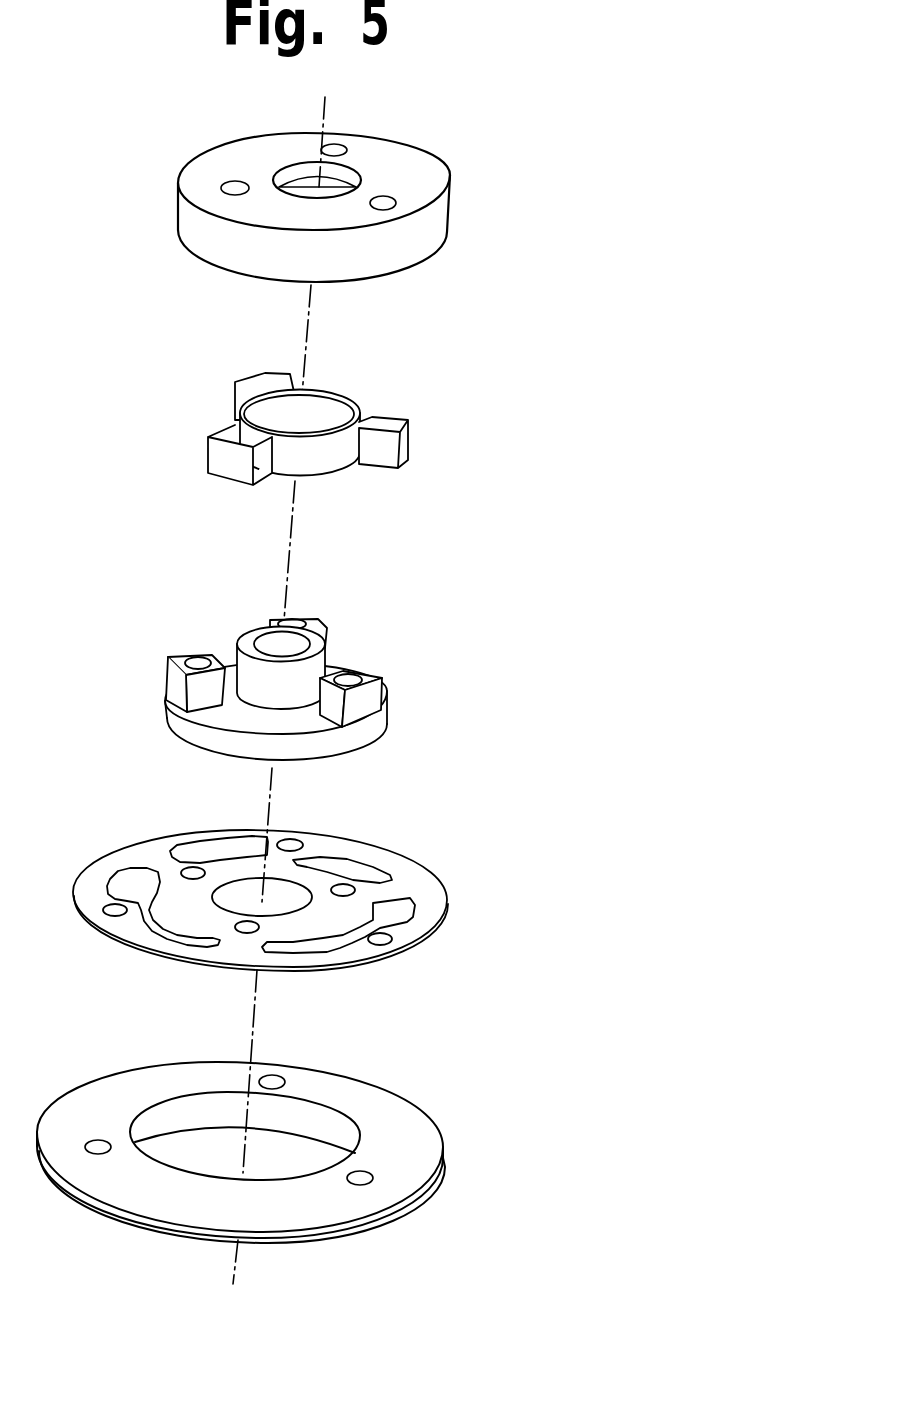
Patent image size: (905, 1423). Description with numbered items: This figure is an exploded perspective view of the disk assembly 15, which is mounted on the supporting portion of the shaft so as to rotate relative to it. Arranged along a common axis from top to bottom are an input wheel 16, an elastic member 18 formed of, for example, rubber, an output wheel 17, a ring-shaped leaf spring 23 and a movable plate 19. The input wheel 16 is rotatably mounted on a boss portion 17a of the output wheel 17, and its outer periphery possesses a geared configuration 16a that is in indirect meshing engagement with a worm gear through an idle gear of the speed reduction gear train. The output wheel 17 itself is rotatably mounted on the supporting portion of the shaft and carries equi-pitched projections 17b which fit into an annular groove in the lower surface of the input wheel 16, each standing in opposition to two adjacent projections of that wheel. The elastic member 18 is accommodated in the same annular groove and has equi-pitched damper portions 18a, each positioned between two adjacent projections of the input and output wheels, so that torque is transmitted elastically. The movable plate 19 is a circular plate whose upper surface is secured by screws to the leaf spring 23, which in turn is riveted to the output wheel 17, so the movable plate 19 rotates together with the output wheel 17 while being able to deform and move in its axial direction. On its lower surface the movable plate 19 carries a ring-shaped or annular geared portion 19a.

The disk assembly 15 is at (515, 543).
The input wheel 16 is at (422, 178).
The geared configuration 16a is at (427, 247).
The output wheel 17 is at (305, 661).
The boss portion 17a is at (255, 695).
The projections 17b is at (182, 655).
The elastic member 18 is at (314, 422).
The damper portions 18a is at (267, 383).
The movable plate 19 is at (274, 1155).
The geared portion 19a is at (313, 1239).
The leaf spring 23 is at (410, 877).